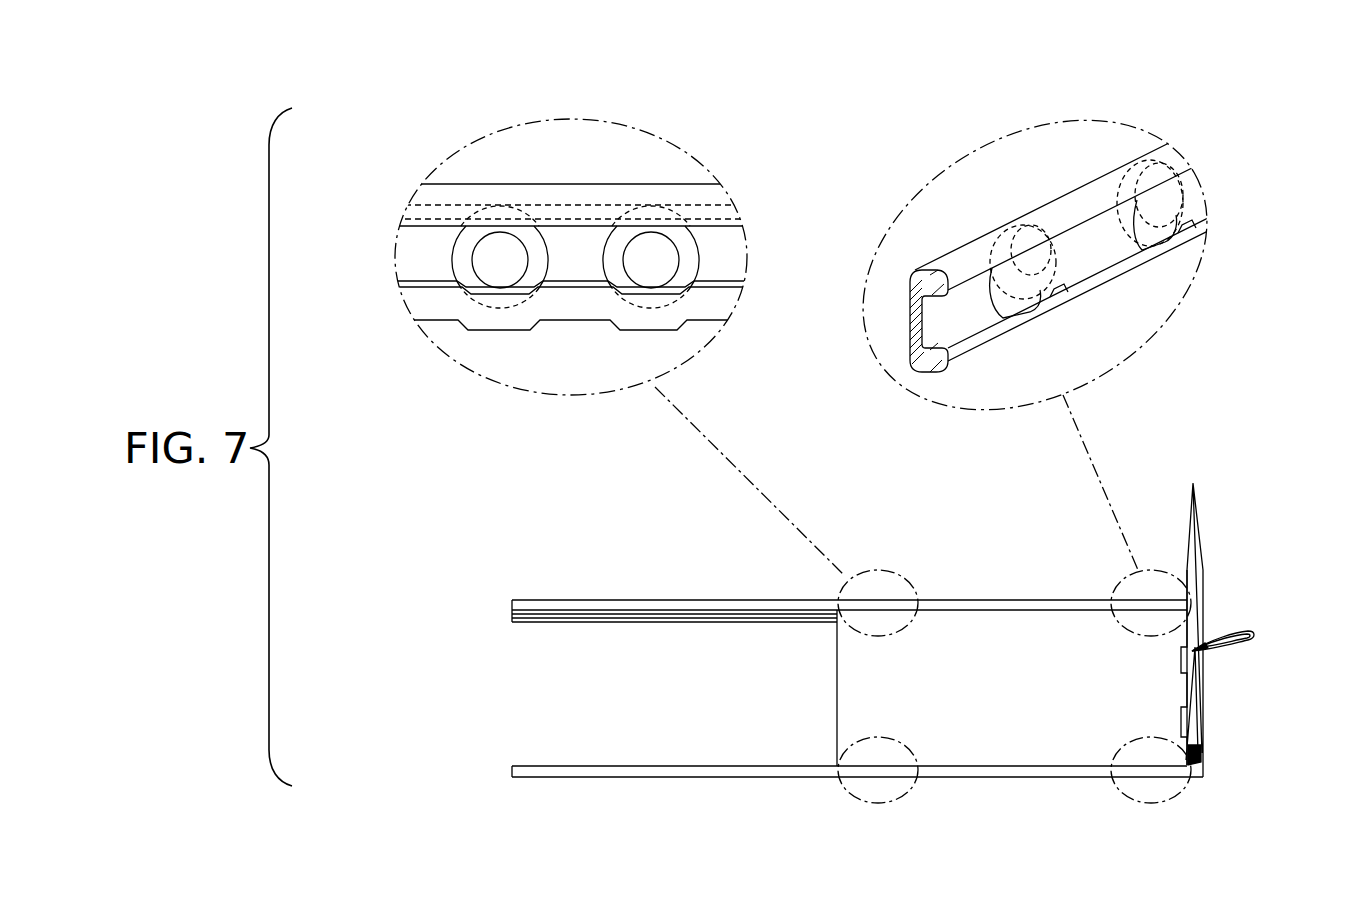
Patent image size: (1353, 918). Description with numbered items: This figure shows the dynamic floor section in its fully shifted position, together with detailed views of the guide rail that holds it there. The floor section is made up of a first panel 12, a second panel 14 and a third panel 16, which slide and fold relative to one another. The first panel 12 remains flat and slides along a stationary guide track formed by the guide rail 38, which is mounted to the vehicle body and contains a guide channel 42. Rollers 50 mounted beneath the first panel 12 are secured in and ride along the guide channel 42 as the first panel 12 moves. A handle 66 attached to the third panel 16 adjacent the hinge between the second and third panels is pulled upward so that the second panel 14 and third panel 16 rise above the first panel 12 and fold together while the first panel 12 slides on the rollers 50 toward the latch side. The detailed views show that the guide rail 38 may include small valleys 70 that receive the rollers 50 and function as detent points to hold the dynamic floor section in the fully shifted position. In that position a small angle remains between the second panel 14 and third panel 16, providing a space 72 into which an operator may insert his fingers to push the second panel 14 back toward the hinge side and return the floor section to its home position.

The first panel 12 is at (995, 712).
The second panel 14 is at (1188, 577).
The third panel 16 is at (1197, 597).
The guide rail 38 is at (460, 192).
The guide channel 42 is at (410, 254).
The first set of rollers 50 is at (610, 262).
The handle 66 is at (1237, 645).
The valleys 70 is at (498, 307).
The space 72 is at (1198, 752).